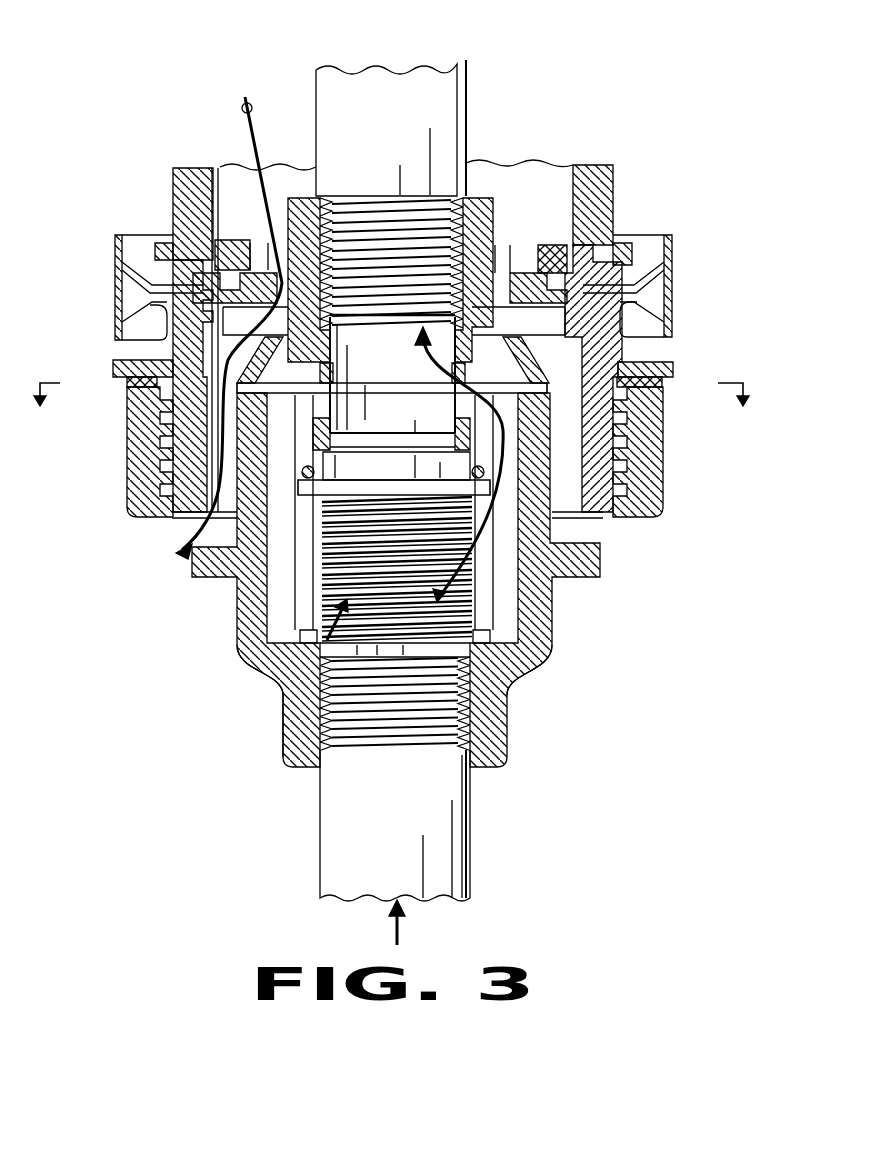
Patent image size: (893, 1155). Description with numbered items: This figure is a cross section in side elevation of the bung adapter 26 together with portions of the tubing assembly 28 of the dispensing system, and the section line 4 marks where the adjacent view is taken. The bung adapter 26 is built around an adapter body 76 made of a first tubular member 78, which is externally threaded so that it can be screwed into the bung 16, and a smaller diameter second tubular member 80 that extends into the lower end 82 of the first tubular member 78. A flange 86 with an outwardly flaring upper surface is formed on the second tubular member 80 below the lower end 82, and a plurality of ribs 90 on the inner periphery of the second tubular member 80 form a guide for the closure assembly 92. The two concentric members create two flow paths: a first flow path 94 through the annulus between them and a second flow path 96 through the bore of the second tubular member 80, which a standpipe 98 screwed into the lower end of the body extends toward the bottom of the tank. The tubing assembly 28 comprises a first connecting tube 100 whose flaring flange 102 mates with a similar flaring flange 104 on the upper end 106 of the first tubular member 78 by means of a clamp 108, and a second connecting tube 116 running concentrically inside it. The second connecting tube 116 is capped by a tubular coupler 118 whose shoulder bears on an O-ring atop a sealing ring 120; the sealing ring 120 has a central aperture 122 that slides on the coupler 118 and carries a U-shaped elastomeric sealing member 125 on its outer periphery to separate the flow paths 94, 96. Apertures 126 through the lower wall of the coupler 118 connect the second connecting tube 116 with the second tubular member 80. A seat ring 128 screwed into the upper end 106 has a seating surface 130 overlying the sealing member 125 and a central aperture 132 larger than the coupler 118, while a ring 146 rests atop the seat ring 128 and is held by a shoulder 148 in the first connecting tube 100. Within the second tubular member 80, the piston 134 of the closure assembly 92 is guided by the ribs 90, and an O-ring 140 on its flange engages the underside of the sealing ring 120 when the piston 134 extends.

The second connecting tube 116 is at (332, 82).
The tubular coupler 118 is at (490, 197).
The first flow path 94 is at (256, 106).
The ring 146 is at (235, 240).
The shoulder 148 is at (175, 212).
The flaring flange 102 is at (160, 275).
The flaring flange 104 is at (200, 290).
The tubing assembly 28 is at (600, 169).
The central aperture 132 is at (507, 266).
The first connecting tube 100 is at (512, 277).
The seat ring 128 is at (575, 283).
The seating surface 130 is at (642, 272).
The upper end 106 is at (668, 252).
The clamp 108 is at (650, 302).
The bung adapter 26 is at (686, 326).
The sealing ring 120 is at (575, 352).
The elastomeric sealing member 125 is at (600, 375).
The section line 4- 4 is at (391, 407).
The first tubular member 78 is at (184, 483).
The adapter body 76 is at (628, 480).
The bung 16 is at (180, 517).
The second tubular member 80 is at (247, 584).
The piston 134 is at (305, 598).
The ribs 90 is at (250, 661).
The closure assembly 92 is at (297, 668).
The lower end 82 is at (603, 519).
The flange 86 is at (572, 568).
The second flow path 96 is at (427, 357).
The central aperture 122 is at (326, 363).
The apertures 126 is at (455, 411).
The O-ring 140 is at (323, 493).
The standpipe 98 is at (443, 821).